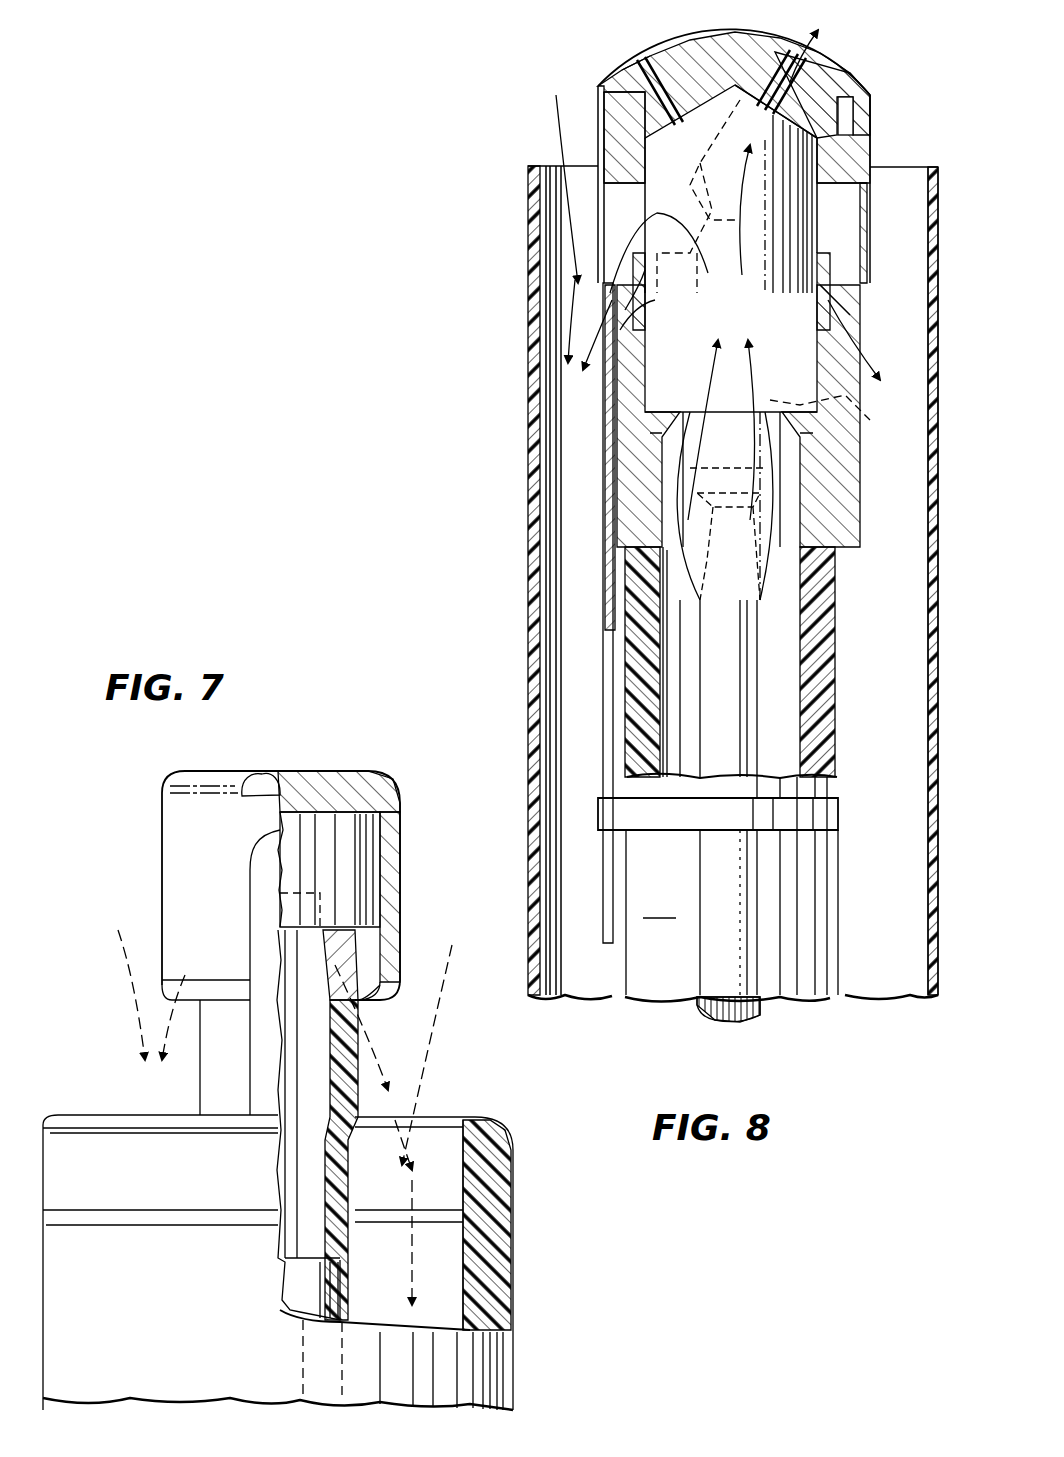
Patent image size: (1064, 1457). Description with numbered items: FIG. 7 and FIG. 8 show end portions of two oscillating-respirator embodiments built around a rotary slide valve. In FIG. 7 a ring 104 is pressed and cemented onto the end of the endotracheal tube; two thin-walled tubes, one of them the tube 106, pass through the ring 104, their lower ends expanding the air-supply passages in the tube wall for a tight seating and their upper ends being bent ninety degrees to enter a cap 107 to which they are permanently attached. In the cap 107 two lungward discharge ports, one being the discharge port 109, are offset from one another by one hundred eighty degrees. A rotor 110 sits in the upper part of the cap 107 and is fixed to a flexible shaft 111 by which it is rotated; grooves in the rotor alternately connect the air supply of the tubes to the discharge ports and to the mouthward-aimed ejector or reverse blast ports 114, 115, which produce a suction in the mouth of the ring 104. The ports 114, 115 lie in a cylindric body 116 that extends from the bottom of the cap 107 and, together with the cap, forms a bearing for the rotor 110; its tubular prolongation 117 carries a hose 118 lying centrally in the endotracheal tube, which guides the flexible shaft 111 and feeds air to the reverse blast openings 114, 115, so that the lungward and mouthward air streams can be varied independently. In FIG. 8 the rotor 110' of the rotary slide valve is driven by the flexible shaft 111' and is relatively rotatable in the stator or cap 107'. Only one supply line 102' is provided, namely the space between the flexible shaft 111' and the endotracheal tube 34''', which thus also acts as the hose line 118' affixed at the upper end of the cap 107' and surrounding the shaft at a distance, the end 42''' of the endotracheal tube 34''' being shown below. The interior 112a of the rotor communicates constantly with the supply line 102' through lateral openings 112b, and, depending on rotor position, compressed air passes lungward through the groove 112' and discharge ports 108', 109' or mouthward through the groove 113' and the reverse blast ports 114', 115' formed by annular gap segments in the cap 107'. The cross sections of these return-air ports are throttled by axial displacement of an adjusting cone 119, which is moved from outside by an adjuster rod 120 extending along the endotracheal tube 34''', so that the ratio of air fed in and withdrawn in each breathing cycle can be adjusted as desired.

In FIG. 7, the cap 107 is at (281, 862).
In FIG. 7, the discharge port 109 is at (263, 757).
In FIG. 7, the rotor 110 is at (364, 869).
In FIG. 7, the cylindric body 116 is at (350, 928).
In FIG. 7, the ejector or reverse blast port 114 is at (386, 965).
In FIG. 7, the ejector or reverse blast port 115 is at (199, 972).
In FIG. 7, the tubular prolongation 117 is at (330, 1037).
In FIG. 7, the flexible shaft 111 is at (344, 1130).
In FIG. 7, the hose 118 is at (359, 1160).
In FIG. 7, the thin-walled tube 106 is at (250, 1090).
In FIG. 7, the ring 104 is at (505, 1128).
In FIG. 8, the stator or cap 107' is at (734, 151).
In FIG. 8, the discharge port 108' is at (612, 54).
In FIG. 8, the discharge port 109' is at (841, 56).
In FIG. 8, the rotor 110' is at (847, 195).
In FIG. 8, the groove 112' is at (704, 160).
In FIG. 8, the groove 113' is at (680, 219).
In FIG. 8, the adjusting cone 119 is at (608, 395).
In FIG. 8, the reverse blast port 114' is at (656, 296).
In FIG. 8, the reverse blast port 115' is at (824, 316).
In FIG. 8, the interior of the rotor 112a is at (860, 400).
In FIG. 8, the lateral openings 112b is at (725, 470).
In FIG. 8, the hose line 118' is at (762, 662).
In FIG. 8, the collar 42''' is at (746, 749).
In FIG. 8, the supply line 102' is at (763, 797).
In FIG. 8, the endotracheal tube 34''' is at (665, 904).
In FIG. 8, the adjuster rod 120 is at (600, 920).
In FIG. 8, the flexible shaft 111' is at (762, 1030).